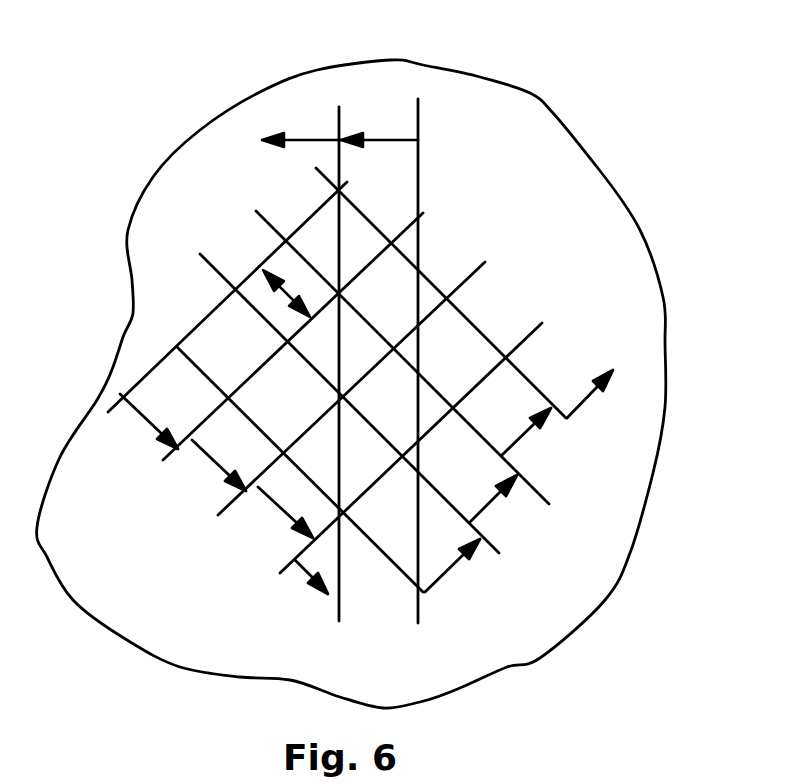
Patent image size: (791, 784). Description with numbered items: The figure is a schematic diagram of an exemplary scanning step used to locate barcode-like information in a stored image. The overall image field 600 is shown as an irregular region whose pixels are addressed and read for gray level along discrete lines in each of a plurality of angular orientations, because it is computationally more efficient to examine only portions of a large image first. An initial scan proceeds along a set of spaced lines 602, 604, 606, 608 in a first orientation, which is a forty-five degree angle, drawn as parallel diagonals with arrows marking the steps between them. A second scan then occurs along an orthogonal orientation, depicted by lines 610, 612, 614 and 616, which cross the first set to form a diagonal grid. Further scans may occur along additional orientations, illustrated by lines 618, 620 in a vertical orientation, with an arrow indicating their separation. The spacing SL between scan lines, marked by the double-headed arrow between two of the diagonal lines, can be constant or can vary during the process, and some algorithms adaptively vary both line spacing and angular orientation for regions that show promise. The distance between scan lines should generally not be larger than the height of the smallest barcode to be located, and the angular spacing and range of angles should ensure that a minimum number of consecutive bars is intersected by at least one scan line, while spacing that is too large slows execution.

The overall image field 600 is at (588, 178).
The spaced scan line 602 is at (106, 409).
The spaced scan line 604 is at (163, 460).
The spaced scan line 606 is at (223, 515).
The spaced scan line 608 is at (290, 566).
The orthogonal scan line 610 is at (425, 592).
The orthogonal scan line 612 is at (497, 547).
The orthogonal scan line 614 is at (533, 484).
The orthogonal scan line 616 is at (568, 418).
The vertical scan line 618 is at (423, 121).
The vertical scan line 620 is at (343, 127).
The scan line spacing SL is at (285, 292).